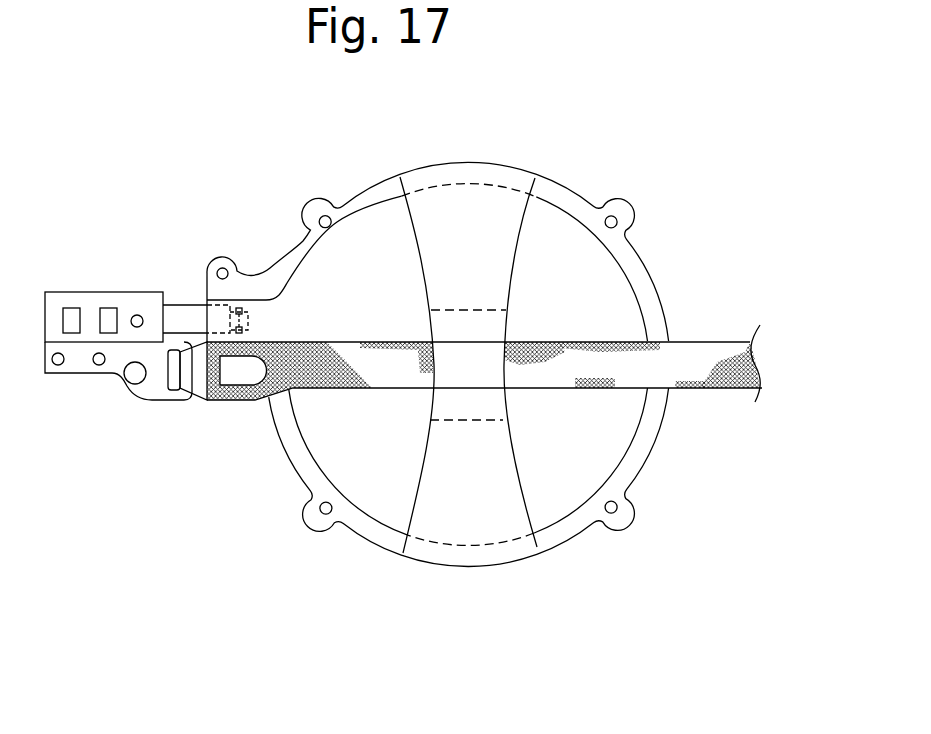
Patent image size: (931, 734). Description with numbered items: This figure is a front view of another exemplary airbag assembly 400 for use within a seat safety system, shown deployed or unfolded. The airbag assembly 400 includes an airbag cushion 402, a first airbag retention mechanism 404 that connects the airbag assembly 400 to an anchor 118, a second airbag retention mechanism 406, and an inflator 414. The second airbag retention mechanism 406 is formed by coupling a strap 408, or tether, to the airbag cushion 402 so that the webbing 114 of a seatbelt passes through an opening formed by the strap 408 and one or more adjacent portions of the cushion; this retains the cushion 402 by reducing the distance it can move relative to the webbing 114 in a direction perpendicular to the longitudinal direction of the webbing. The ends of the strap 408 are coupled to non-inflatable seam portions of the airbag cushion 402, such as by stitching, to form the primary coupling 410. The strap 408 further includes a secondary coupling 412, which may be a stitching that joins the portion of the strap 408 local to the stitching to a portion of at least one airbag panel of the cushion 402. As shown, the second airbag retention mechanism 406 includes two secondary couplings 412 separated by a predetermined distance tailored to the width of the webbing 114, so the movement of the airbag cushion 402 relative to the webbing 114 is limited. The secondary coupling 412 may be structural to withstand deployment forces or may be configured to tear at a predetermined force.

The airbag assembly 400 is at (440, 337).
The airbag cushion 402 is at (590, 427).
The first airbag retention mechanism 404 is at (126, 386).
The second airbag retention mechanism 406 is at (546, 437).
The strap 408 is at (468, 330).
The primary coupling 410 is at (450, 178).
The secondary coupling 412 is at (470, 420).
The inflator 414 is at (187, 317).
The anchor 118 is at (158, 389).
The webbing 114 is at (745, 365).